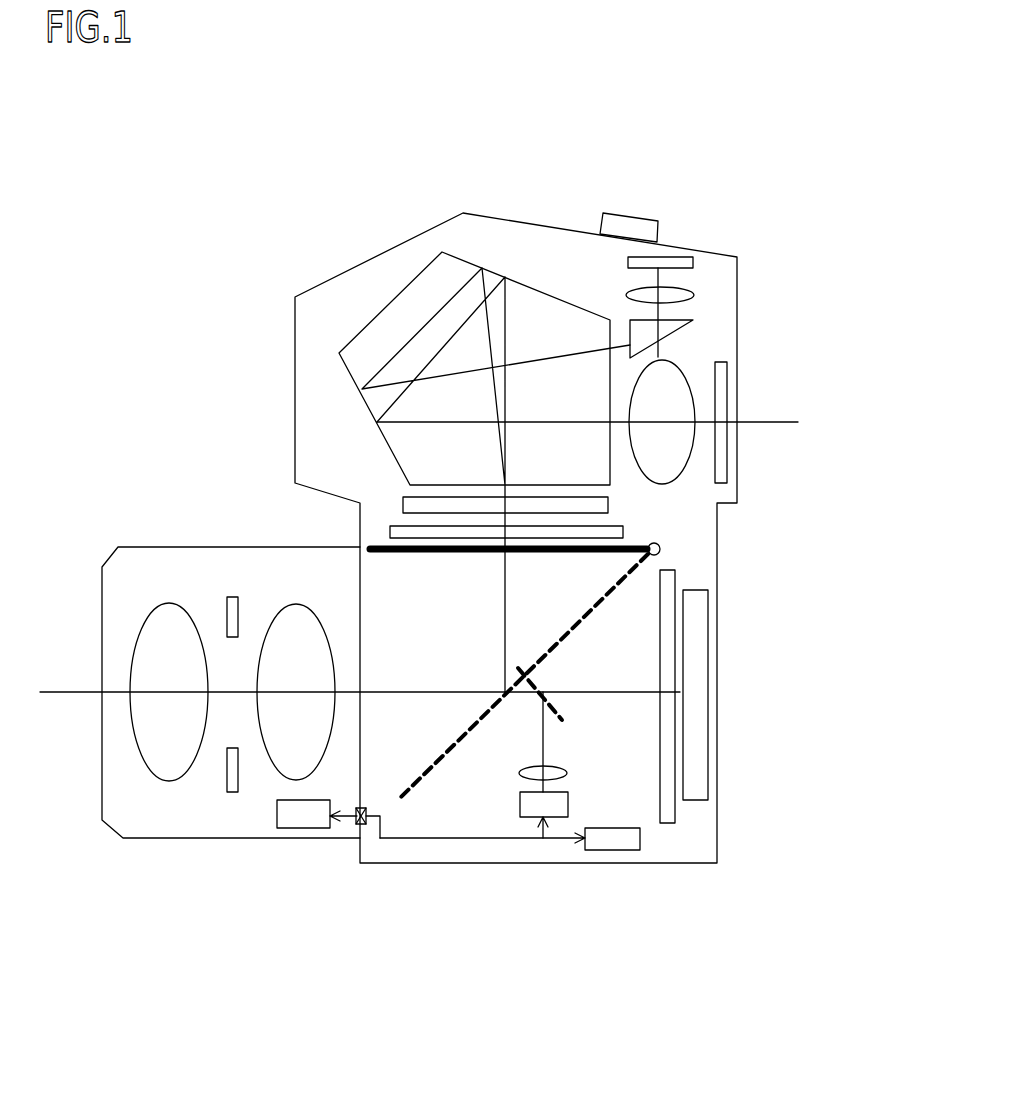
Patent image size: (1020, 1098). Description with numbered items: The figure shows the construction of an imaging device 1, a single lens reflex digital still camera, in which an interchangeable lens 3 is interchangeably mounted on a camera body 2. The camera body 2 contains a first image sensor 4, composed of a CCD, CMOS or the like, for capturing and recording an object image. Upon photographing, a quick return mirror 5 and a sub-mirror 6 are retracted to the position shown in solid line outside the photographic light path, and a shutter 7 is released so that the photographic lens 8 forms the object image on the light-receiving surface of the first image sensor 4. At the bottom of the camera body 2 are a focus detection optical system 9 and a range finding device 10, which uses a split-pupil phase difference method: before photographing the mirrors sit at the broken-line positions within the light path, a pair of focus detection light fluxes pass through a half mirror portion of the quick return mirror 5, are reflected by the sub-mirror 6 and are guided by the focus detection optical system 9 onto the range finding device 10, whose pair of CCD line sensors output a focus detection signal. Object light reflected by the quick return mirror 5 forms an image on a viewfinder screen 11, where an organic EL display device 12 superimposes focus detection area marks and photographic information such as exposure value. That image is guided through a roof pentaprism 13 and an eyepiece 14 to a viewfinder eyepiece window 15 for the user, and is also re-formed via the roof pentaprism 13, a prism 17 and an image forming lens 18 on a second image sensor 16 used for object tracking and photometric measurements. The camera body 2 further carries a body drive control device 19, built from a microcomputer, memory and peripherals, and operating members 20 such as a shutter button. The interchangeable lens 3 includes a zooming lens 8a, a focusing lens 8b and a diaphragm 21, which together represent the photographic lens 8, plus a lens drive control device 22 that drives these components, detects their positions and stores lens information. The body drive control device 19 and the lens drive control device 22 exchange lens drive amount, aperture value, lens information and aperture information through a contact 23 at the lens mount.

The imaging device 1 is at (516, 548).
The camera body 2 is at (458, 865).
The interchangeable lens 3 is at (213, 840).
The first image sensor 4 is at (705, 738).
The quick return mirror 5 is at (433, 767).
The sub-mirror 6 is at (560, 717).
The shutter 7 is at (680, 632).
The photographic lens 8 is at (232, 601).
The zooming lens 8a is at (167, 603).
The focusing lens 8b is at (287, 603).
The focus detection optical system 9 is at (560, 768).
The range finding device 10 is at (560, 802).
The viewfinder screen 11 is at (608, 510).
The organic EL display device 12 is at (620, 533).
The roof pentaprism 13 is at (538, 320).
The eyepiece 14 is at (685, 437).
The viewfinder eyepiece window 15 is at (725, 385).
The second image sensor 16 is at (680, 252).
The prism 17 is at (690, 322).
The image forming lens 18 is at (680, 290).
The body drive control device 19 is at (613, 852).
The operating members 20 is at (630, 215).
The diaphragm 21 is at (225, 782).
The lens drive control device 22 is at (307, 827).
The contact 23 is at (360, 812).